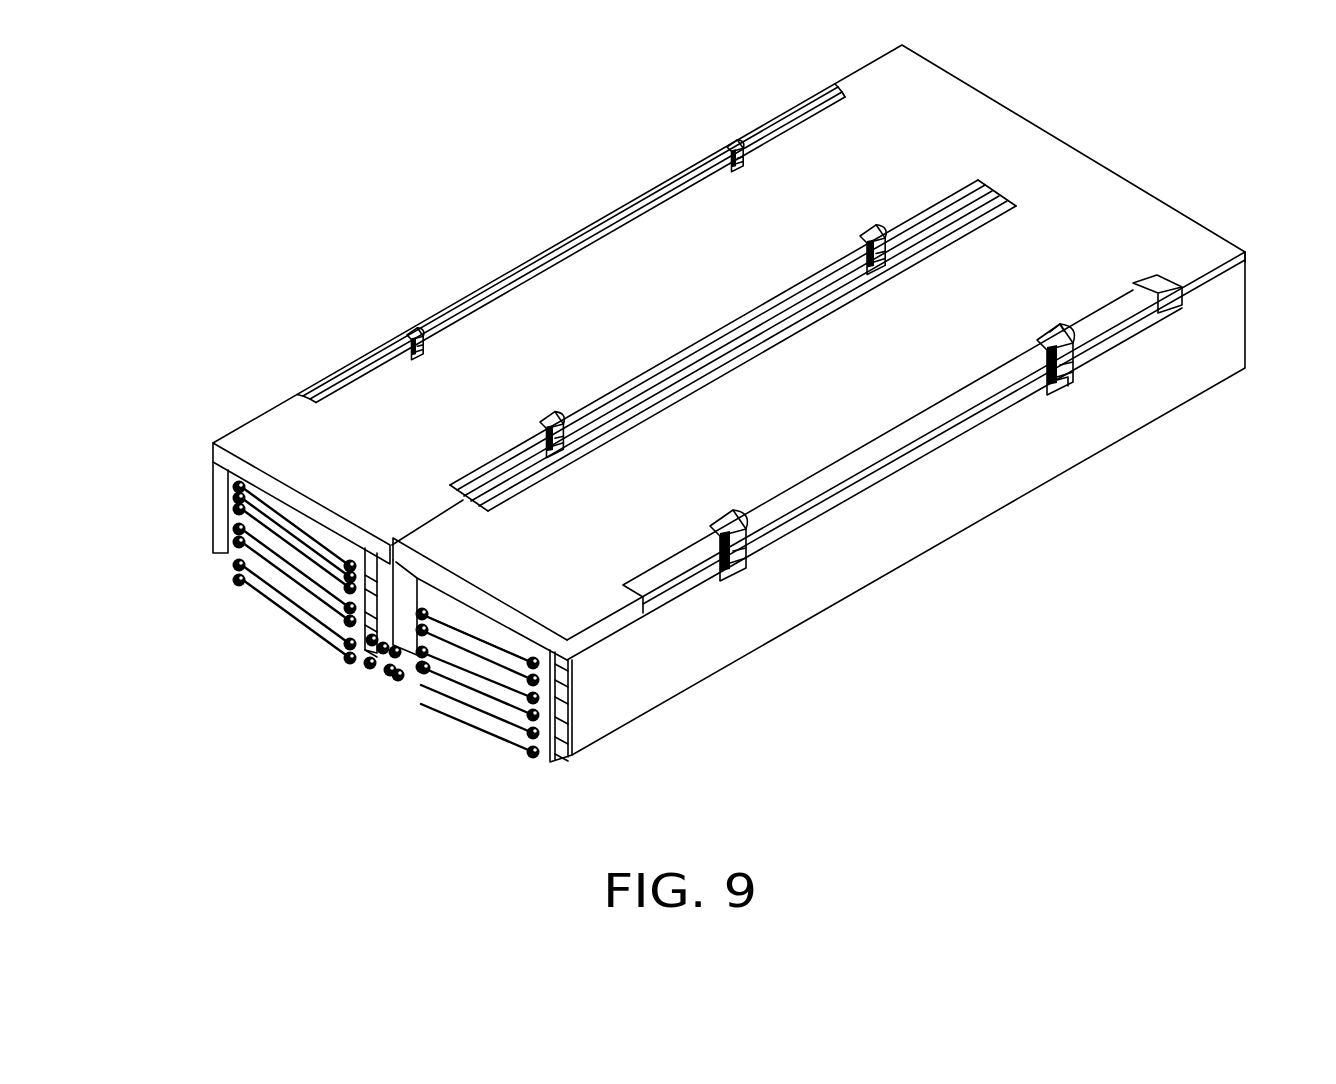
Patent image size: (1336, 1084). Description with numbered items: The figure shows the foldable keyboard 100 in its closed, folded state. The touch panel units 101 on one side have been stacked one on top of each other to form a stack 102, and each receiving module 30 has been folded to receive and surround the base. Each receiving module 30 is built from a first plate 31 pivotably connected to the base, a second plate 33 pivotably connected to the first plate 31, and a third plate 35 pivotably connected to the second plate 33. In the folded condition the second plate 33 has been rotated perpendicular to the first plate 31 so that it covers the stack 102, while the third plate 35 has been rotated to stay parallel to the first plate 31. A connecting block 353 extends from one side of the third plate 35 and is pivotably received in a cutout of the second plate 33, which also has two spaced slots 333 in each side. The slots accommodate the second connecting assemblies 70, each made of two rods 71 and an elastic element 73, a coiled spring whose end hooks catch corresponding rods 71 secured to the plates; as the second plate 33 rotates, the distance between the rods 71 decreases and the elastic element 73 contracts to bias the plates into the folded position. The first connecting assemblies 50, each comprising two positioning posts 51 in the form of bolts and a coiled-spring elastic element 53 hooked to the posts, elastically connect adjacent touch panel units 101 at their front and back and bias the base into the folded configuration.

The foldable keyboard 100 is at (279, 120).
The receiving module 30 is at (207, 710).
The first plate 31 is at (385, 612).
The second plate 33 is at (340, 523).
The third plate 35 is at (217, 531).
The first connecting assembly 50 is at (712, 742).
The positioning post 51 is at (540, 738).
The elastic element 53 is at (540, 737).
The second connecting assembly 70 is at (898, 232).
The rod 71 is at (1065, 338).
The elastic element 73 is at (1068, 352).
The slot 333 is at (1058, 328).
The connecting block 353 is at (1062, 385).
The touch panel unit 101 is at (513, 663).
The stack 102 is at (402, 853).